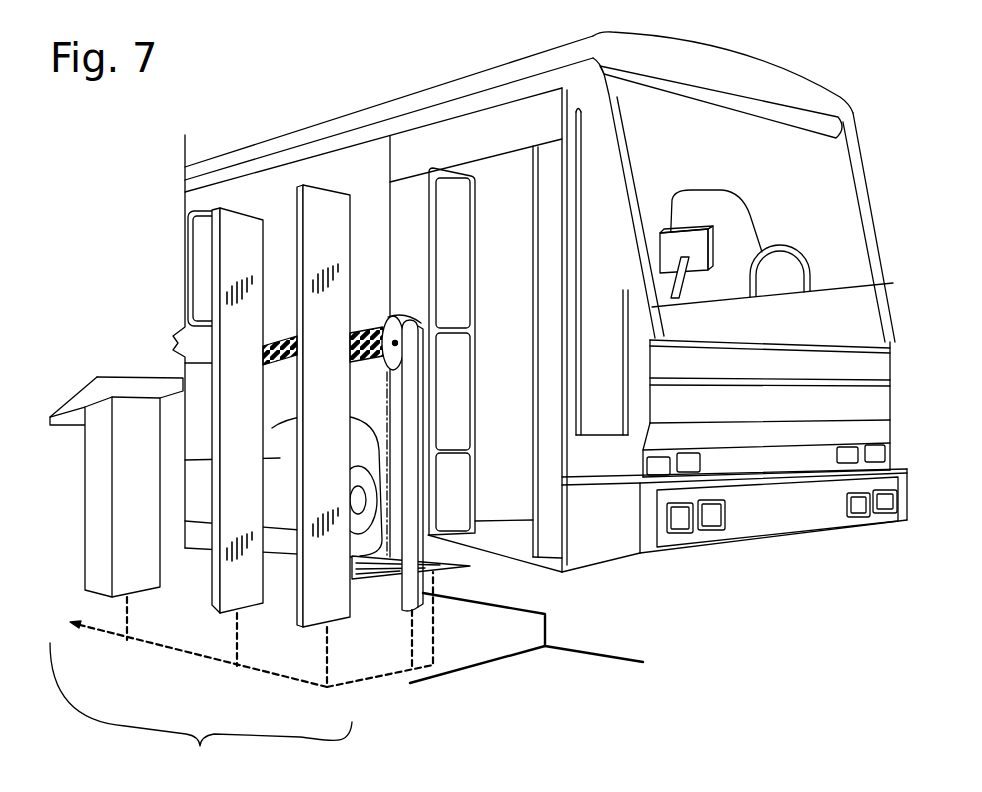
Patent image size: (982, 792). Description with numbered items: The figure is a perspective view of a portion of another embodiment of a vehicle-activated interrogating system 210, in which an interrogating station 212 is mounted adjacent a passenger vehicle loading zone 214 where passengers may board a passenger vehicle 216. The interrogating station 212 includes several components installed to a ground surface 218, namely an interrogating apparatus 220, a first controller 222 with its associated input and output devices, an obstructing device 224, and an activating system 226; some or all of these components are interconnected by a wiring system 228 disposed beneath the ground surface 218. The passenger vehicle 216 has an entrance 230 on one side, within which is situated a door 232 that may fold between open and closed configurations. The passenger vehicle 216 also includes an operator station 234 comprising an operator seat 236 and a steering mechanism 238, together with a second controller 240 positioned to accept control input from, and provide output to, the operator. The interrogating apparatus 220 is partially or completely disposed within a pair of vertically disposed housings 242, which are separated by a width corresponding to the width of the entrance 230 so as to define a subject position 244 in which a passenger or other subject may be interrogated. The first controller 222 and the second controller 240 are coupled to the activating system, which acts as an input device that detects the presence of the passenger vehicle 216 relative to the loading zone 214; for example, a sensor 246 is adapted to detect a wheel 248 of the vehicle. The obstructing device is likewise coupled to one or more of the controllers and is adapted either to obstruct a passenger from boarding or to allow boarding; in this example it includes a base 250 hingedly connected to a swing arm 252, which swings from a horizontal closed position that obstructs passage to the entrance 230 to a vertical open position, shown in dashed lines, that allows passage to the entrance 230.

The vehicle-activated interrogating system 210 is at (120, 306).
The interrogating station 212 is at (201, 707).
The passenger vehicle loading zone 214 is at (427, 702).
The passenger vehicle 216 is at (752, 52).
The ground surface 218 is at (520, 616).
The interrogating apparatus 220 is at (243, 205).
The first controller 222 is at (79, 518).
The obstructing device 224 is at (462, 572).
The activating system 226 is at (426, 620).
The wiring system 228 is at (170, 648).
The entrance 230 is at (527, 287).
The door 232 is at (453, 213).
The operator station 234 is at (769, 228).
The operator seat 236 is at (706, 192).
The steering mechanism 238 is at (792, 257).
The second controller 240 is at (699, 222).
The vertically disposed housings 242 is at (261, 252).
The subject position 244 is at (275, 622).
The sensor 246 is at (400, 581).
The wheel 248 is at (371, 533).
The base 250 is at (409, 417).
The swing arm 252 is at (365, 325).